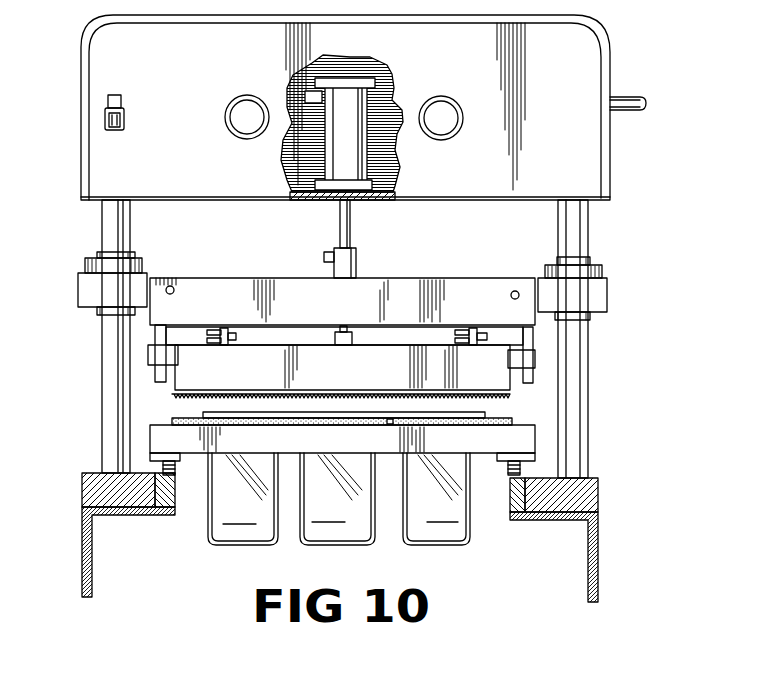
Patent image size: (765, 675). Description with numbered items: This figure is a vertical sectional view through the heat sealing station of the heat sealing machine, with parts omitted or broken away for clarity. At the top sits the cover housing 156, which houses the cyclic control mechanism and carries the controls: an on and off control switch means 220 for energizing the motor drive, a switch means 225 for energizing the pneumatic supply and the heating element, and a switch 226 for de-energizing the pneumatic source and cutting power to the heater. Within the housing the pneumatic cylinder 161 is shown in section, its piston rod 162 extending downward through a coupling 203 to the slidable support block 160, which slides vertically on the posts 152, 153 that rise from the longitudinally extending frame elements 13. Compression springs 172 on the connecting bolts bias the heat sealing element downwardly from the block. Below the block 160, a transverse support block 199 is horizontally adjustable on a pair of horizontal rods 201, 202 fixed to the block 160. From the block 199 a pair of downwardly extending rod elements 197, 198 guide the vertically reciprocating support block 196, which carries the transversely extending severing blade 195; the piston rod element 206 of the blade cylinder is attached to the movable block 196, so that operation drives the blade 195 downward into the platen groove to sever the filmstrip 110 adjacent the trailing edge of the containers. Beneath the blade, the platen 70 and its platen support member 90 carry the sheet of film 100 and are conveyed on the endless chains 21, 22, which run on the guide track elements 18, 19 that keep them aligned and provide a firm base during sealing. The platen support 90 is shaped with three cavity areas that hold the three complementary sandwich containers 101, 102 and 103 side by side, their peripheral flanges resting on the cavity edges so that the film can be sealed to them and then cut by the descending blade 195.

The longitudinally extending frame element 13 is at (94, 540).
The guide track element 18 is at (175, 498).
The guide track element 19 is at (510, 493).
The endless chain 21 is at (511, 466).
The endless chain 22 is at (174, 464).
The lower platen 70 is at (541, 448).
The platen support member 90 is at (492, 416).
The sheet material 100 is at (318, 423).
The sandwich container 101 is at (436, 499).
The sandwich container 102 is at (337, 499).
The sandwich container 103 is at (243, 499).
The filmstrip 110 is at (217, 413).
The vertically extending post 152 is at (583, 377).
The vertically extending post 153 is at (104, 329).
The cover housing 156 is at (462, 32).
The slidable support block 160 is at (602, 288).
The pneumatic cylinder 161 is at (362, 116).
The piston rod 162 is at (351, 237).
The compression spring 172 is at (230, 340).
The severing blade 195 is at (511, 397).
The support block 196 is at (392, 348).
The rod element 197 is at (165, 338).
The rod element 198 is at (526, 336).
The transverse support block 199 is at (247, 292).
The horizontally extending rod 201 is at (518, 291).
The horizontally extending rod 202 is at (174, 293).
The coupling 203 is at (356, 267).
The piston rod element 206 is at (338, 334).
The on and off control switch means 220 is at (121, 95).
The switch means 225 is at (231, 129).
The switch 226 is at (455, 132).